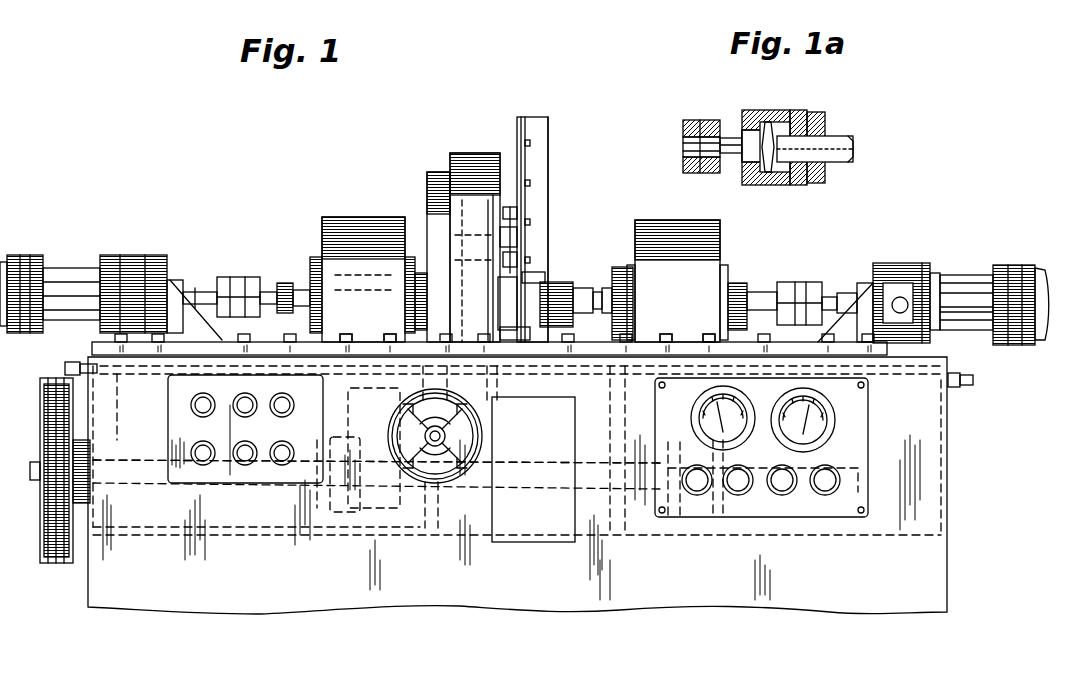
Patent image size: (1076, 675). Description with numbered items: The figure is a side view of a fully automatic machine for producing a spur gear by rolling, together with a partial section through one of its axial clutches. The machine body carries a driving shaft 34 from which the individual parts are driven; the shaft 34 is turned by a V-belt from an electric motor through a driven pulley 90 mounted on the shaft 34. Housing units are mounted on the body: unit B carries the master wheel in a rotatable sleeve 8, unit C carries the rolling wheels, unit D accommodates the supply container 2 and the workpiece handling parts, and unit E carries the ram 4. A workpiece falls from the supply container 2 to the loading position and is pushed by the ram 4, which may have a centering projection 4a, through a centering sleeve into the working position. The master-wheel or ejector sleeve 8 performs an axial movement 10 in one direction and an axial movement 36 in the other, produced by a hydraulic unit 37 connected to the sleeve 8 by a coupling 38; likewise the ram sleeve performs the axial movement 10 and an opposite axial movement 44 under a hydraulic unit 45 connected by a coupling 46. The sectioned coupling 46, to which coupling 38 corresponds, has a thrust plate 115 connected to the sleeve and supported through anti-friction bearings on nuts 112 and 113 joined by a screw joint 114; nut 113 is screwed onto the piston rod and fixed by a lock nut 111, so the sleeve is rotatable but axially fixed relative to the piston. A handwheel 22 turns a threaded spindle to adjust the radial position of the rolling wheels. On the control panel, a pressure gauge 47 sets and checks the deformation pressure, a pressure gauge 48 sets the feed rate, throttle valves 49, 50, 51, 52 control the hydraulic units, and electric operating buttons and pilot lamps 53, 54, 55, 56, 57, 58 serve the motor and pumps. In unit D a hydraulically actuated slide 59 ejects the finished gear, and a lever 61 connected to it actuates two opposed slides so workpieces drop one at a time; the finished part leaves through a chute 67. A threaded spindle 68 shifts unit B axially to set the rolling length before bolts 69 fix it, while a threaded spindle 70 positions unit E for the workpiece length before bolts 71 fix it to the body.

In FIG. 1, the supply container 2 is at (545, 140).
In FIG. 1, the ram 4 is at (568, 310).
In FIG. 1, the centering projection 4a is at (555, 290).
In FIG. 1, the master-wheel sleeve 8 is at (292, 290).
In FIG. 1, the axial movement 10 is at (248, 268).
In FIG. 1, the handwheel 22 is at (405, 408).
In FIG. 1, the shaft 34 is at (140, 462).
In FIG. 1, the axial movement 36 is at (210, 272).
In FIG. 1, the hydraulic unit 37 is at (68, 290).
In FIG. 1, the coupling 38 is at (245, 280).
In FIG. 1, the axial movement 44 is at (864, 278).
In FIG. 1, the hydraulic unit 45 is at (963, 295).
In FIG. 1, the coupling 46 is at (780, 288).
In FIG. 1, the pressure gauge 47 is at (700, 412).
In FIG. 1, the pressure gauge 48 is at (830, 426).
In FIG. 1, the throttle valve 49 is at (685, 488).
In FIG. 1, the throttle valve 50 is at (740, 488).
In FIG. 1, the throttle valve 51 is at (786, 488).
In FIG. 1, the throttle valve 52 is at (828, 488).
In FIG. 1, the electric operating button and pilot lamp 53 is at (200, 412).
In FIG. 1, the electric operating button and pilot lamp 54 is at (243, 412).
In FIG. 1, the electric operating button and pilot lamp 55 is at (280, 412).
In FIG. 1, the electric operating button and pilot lamp 56 is at (205, 460).
In FIG. 1, the electric operating button and pilot lamp 57 is at (246, 460).
In FIG. 1, the electric operating button and pilot lamp 58 is at (283, 460).
In FIG. 1, the slide 59 is at (500, 302).
In FIG. 1, the lever 61 is at (512, 220).
In FIG. 1, the chute 67 is at (545, 520).
In FIG. 1, the threaded spindle 68 is at (75, 362).
In FIG. 1, the bolts 69 is at (386, 335).
In FIG. 1, the threaded spindle 70 is at (962, 387).
In FIG. 1, the bolts 71 is at (705, 335).
In FIG. 1, the driven pulley 90 is at (58, 563).
In FIG. 1A, the lock nut 111 is at (825, 133).
In FIG. 1A, the nut 112 is at (750, 120).
In FIG. 1A, the nut 113 is at (795, 178).
In FIG. 1A, the screw joint 114 is at (800, 118).
In FIG. 1A, the thrust plate 115 is at (768, 120).